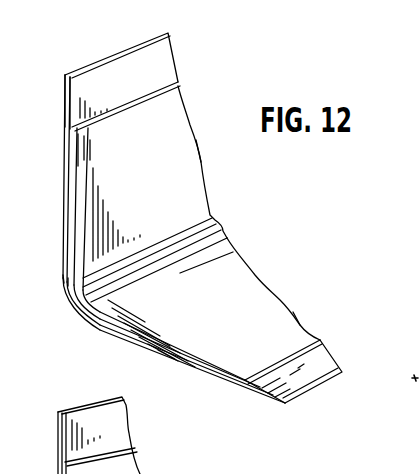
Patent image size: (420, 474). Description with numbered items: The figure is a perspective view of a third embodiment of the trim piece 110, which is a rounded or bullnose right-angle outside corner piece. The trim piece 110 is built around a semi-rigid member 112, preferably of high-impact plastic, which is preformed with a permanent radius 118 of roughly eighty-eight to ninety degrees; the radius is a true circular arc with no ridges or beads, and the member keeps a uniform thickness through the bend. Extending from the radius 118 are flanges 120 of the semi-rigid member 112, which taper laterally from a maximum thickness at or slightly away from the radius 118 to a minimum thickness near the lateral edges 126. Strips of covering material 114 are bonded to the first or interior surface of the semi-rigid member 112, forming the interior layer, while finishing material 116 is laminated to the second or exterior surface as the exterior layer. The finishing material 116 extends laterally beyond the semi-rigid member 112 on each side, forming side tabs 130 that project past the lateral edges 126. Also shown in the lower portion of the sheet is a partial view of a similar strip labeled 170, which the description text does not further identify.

The trim piece 110 is at (64, 208).
The semi-rigid member 112 is at (72, 303).
The covering material 114 is at (192, 198).
The finishing material 116 is at (88, 324).
The radius 118 is at (157, 267).
The flanges 120 is at (253, 323).
The lateral edges 126 is at (317, 393).
The side tabs 130 is at (93, 80).
The reinforcing strip of adjacent panel 170 is at (70, 443).